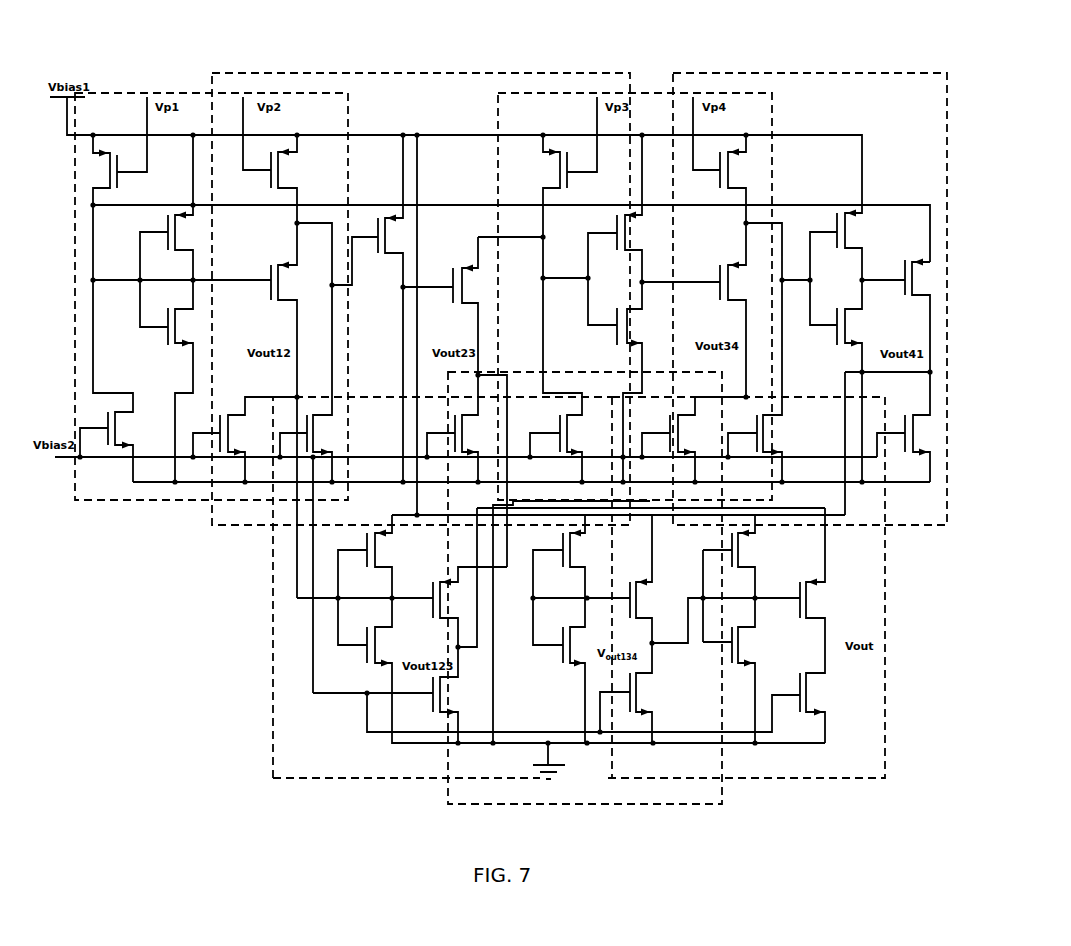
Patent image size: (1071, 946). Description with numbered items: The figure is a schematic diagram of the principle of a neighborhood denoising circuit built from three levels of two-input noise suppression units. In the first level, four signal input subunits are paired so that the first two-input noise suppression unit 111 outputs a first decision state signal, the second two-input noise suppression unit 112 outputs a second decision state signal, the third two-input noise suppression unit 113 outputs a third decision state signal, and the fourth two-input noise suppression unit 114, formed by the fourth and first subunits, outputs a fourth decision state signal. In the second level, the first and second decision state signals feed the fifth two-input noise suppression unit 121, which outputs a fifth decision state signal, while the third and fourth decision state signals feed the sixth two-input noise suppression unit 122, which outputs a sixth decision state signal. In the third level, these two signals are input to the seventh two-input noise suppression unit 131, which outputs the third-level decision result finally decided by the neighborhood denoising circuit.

The first two-input noise suppression unit 111 is at (175, 93).
The second two-input noise suppression unit 112 is at (423, 73).
The third two-input noise suppression unit 113 is at (642, 93).
The fourth two-input noise suppression unit 114 is at (822, 73).
The fifth two-input noise suppression unit 121 is at (402, 778).
The sixth two-input noise suppression unit 122 is at (598, 804).
The seventh two-input noise suppression unit 131 is at (792, 778).